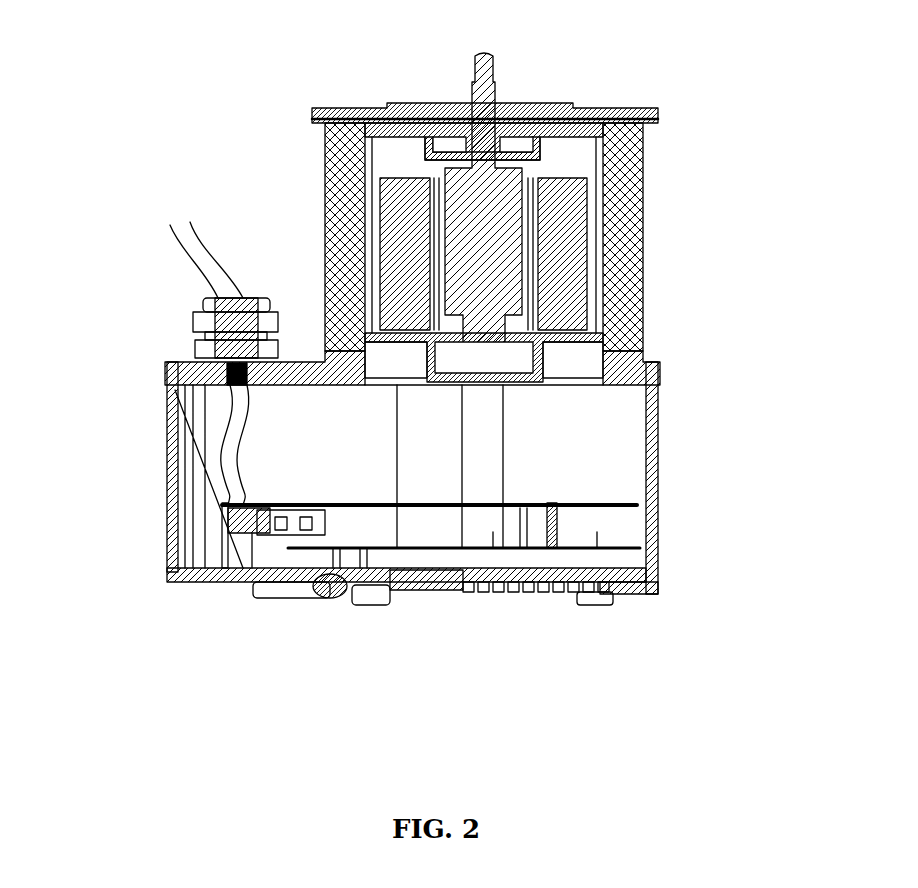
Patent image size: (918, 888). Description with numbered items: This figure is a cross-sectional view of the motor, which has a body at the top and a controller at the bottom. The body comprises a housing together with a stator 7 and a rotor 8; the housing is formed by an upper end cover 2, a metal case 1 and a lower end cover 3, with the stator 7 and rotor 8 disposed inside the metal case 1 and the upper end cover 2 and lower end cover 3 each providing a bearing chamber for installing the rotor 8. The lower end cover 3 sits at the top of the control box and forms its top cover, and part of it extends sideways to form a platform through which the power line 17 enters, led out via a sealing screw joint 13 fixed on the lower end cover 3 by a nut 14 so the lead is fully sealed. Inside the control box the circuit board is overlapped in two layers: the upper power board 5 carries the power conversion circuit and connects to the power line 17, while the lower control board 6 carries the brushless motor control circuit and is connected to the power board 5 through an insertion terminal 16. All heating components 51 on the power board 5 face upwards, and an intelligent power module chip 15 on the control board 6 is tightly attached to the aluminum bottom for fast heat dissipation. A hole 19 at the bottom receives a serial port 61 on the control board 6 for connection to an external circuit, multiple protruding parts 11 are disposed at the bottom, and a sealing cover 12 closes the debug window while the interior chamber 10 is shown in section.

The metal case 1 is at (637, 207).
The upper end cover 2 is at (618, 105).
The lower end cover 3 is at (607, 357).
The power board 5 is at (635, 503).
The control board 6 is at (620, 545).
The stator 7 is at (563, 303).
The rotor 8 is at (468, 263).
The control housing chamber 10 is at (593, 463).
The protruding parts 11 is at (530, 602).
The sealing cover 12 is at (170, 510).
The sealing screw joint 13 is at (200, 302).
The nut 14 is at (175, 363).
The intelligent power module chip 15 is at (648, 573).
The terminal 16 is at (477, 593).
The power line 17 is at (193, 237).
The hole 19 is at (447, 578).
The heating components 51 is at (292, 503).
The serial port 61 is at (362, 586).